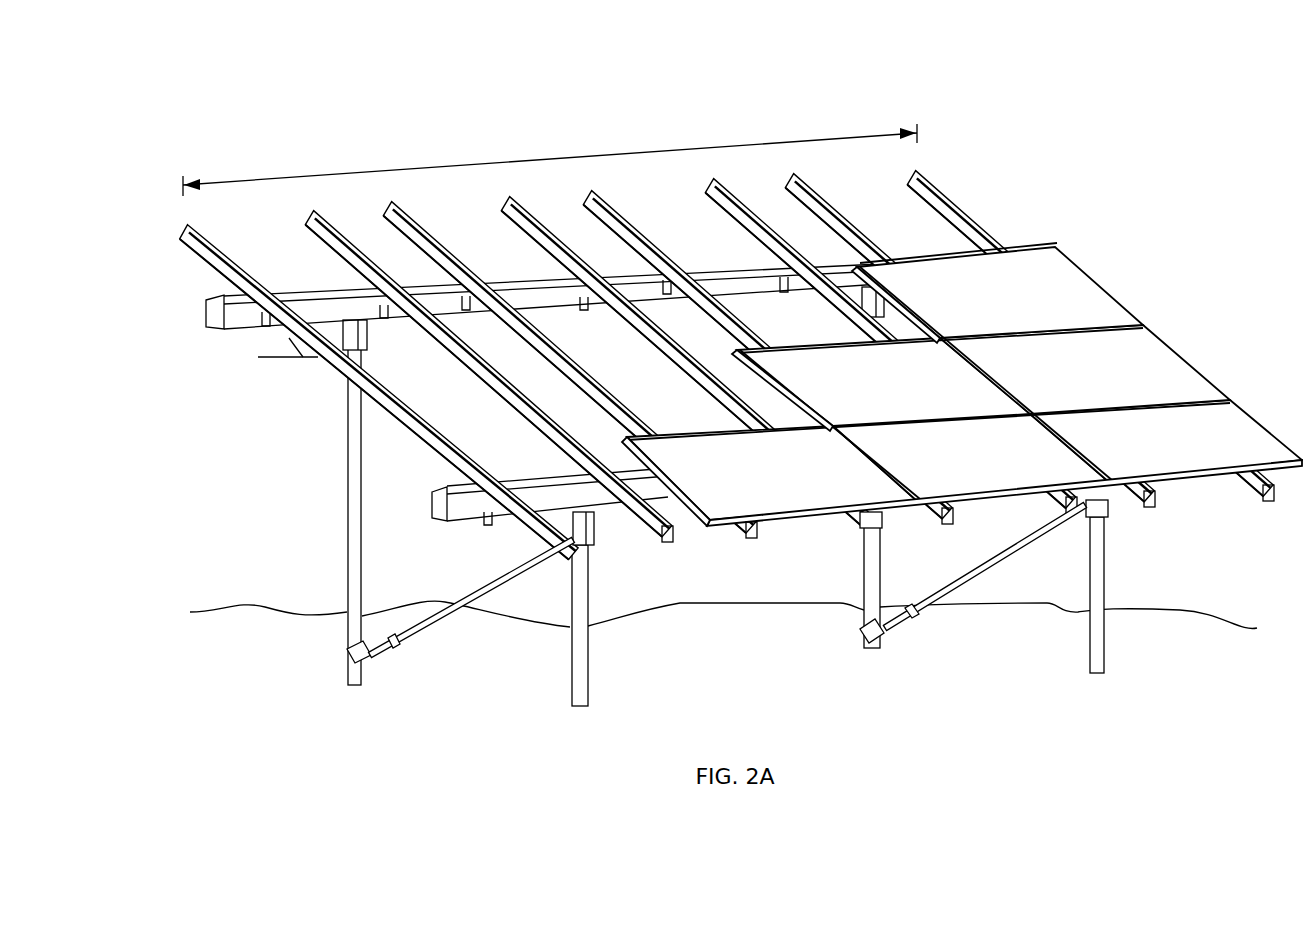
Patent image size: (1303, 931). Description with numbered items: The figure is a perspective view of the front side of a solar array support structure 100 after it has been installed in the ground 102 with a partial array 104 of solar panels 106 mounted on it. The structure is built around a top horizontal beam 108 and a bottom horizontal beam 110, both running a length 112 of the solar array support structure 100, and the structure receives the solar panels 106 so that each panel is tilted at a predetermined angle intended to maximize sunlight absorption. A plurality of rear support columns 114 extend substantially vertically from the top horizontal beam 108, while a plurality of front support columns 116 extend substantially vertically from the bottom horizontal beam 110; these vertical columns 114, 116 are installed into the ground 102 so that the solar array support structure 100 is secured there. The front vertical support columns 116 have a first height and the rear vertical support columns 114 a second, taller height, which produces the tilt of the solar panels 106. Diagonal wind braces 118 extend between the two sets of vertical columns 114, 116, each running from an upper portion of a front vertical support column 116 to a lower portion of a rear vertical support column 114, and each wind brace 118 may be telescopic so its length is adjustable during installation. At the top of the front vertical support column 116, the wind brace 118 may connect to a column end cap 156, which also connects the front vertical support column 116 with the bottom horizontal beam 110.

The solar array support structure 100 is at (1052, 222).
The ground 102 is at (258, 640).
The partial array 104 is at (1052, 290).
The solar panel 106 is at (1135, 374).
The top horizontal beam 108 is at (306, 308).
The bottom horizontal beam 110 is at (543, 493).
The length 112 is at (508, 159).
The rear support column 114 is at (345, 487).
The front support column 116 is at (580, 648).
The diagonal wind brace 118 is at (458, 600).
The column end cap 156 is at (594, 532).